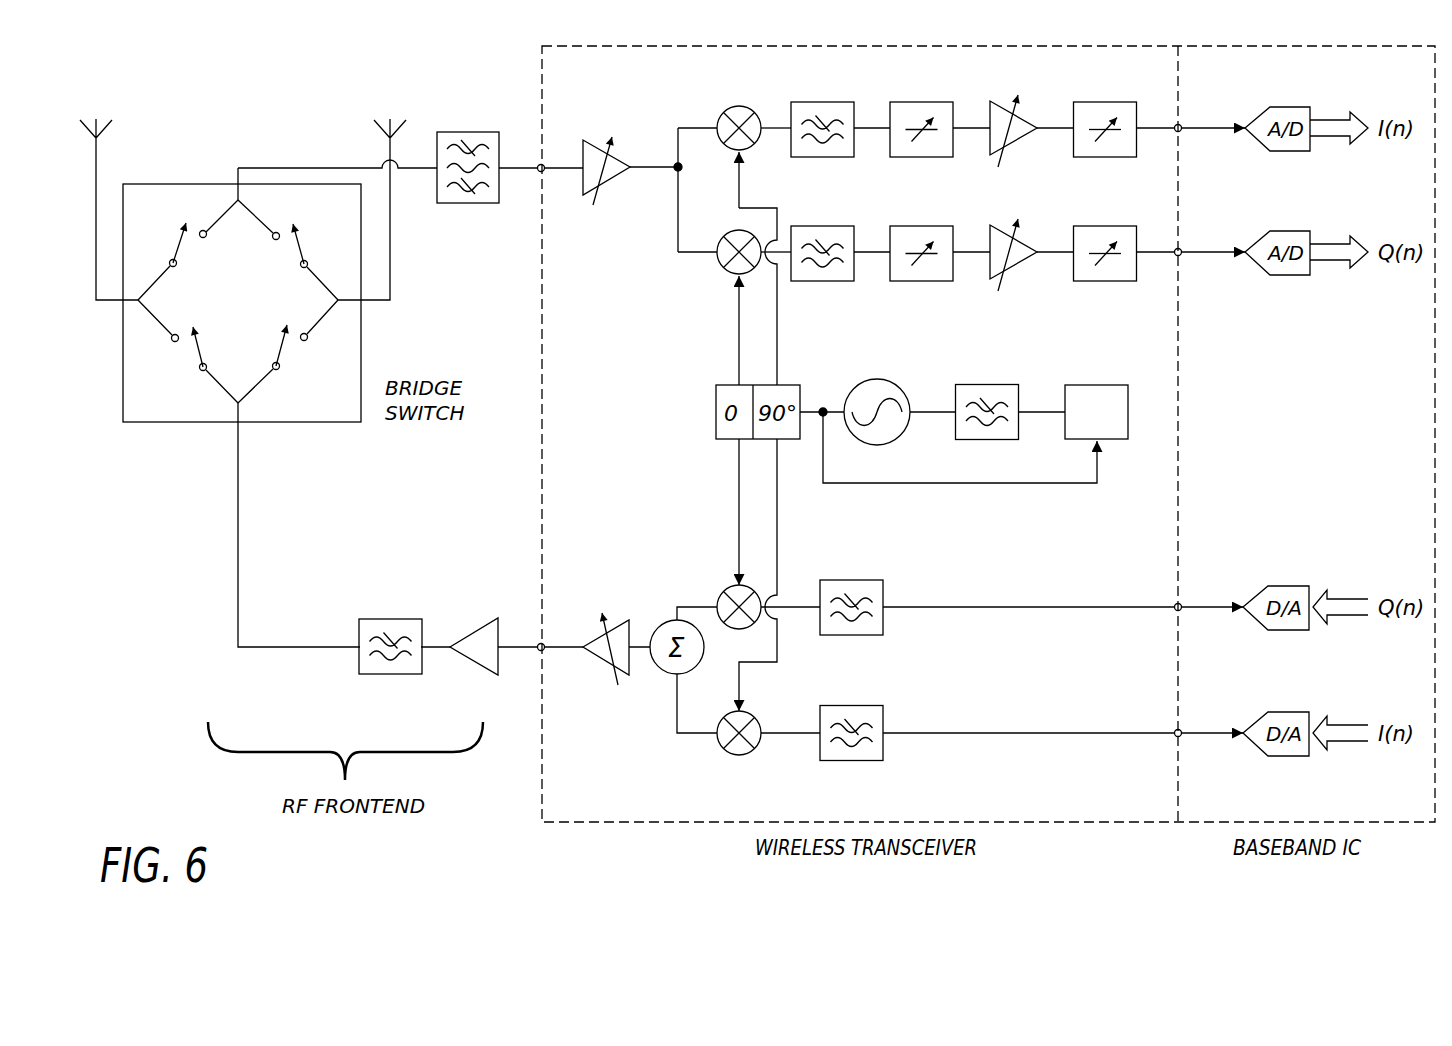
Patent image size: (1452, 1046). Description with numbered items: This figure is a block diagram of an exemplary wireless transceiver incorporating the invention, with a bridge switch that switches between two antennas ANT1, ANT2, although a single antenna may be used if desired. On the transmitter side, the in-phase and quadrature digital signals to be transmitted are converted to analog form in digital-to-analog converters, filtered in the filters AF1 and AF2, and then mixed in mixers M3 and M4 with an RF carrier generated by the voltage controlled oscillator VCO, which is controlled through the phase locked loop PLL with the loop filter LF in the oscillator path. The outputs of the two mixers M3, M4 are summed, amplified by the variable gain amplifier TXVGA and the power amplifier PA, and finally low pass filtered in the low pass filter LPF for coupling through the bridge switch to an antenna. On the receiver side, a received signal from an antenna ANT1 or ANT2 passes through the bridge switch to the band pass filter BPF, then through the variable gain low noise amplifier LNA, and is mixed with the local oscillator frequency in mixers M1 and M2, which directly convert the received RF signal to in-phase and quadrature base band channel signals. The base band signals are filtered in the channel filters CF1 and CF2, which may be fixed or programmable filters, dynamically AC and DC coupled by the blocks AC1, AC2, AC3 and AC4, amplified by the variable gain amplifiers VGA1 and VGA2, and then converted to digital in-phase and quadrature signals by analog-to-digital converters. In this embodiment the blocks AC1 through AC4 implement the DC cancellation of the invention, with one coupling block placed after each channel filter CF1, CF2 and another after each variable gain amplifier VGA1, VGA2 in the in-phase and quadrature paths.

The antenna ANT1 is at (123, 193).
The antenna ANT2 is at (372, 193).
The band pass filter BPF is at (510, 185).
The variable gain low noise amplifier LNA is at (630, 174).
The mixer M1 is at (746, 114).
The mixer M2 is at (746, 239).
The mixer M3 is at (760, 594).
The mixer M4 is at (760, 719).
The channel filter CF1 is at (840, 116).
The channel filter CF2 is at (840, 242).
The dynamic AC and DC coupling block AC1 is at (940, 116).
The dynamic AC and DC coupling block AC2 is at (940, 242).
The dynamic AC and DC coupling block AC3 is at (1124, 115).
The dynamic AC and DC coupling block AC4 is at (1124, 240).
The variable gain amplifier VGA1 is at (1031, 135).
The variable gain amplifier VGA2 is at (1031, 258).
The voltage controlled oscillator VCO is at (900, 397).
The loop filter LF is at (1011, 399).
The phase locked loop PLL is at (975, 434).
The filter AF1 is at (997, 595).
The filter AF2 is at (997, 721).
The variable gain amplifier TXVGA is at (597, 653).
The power amplifier PA is at (479, 661).
The low pass filter LPF is at (390, 662).